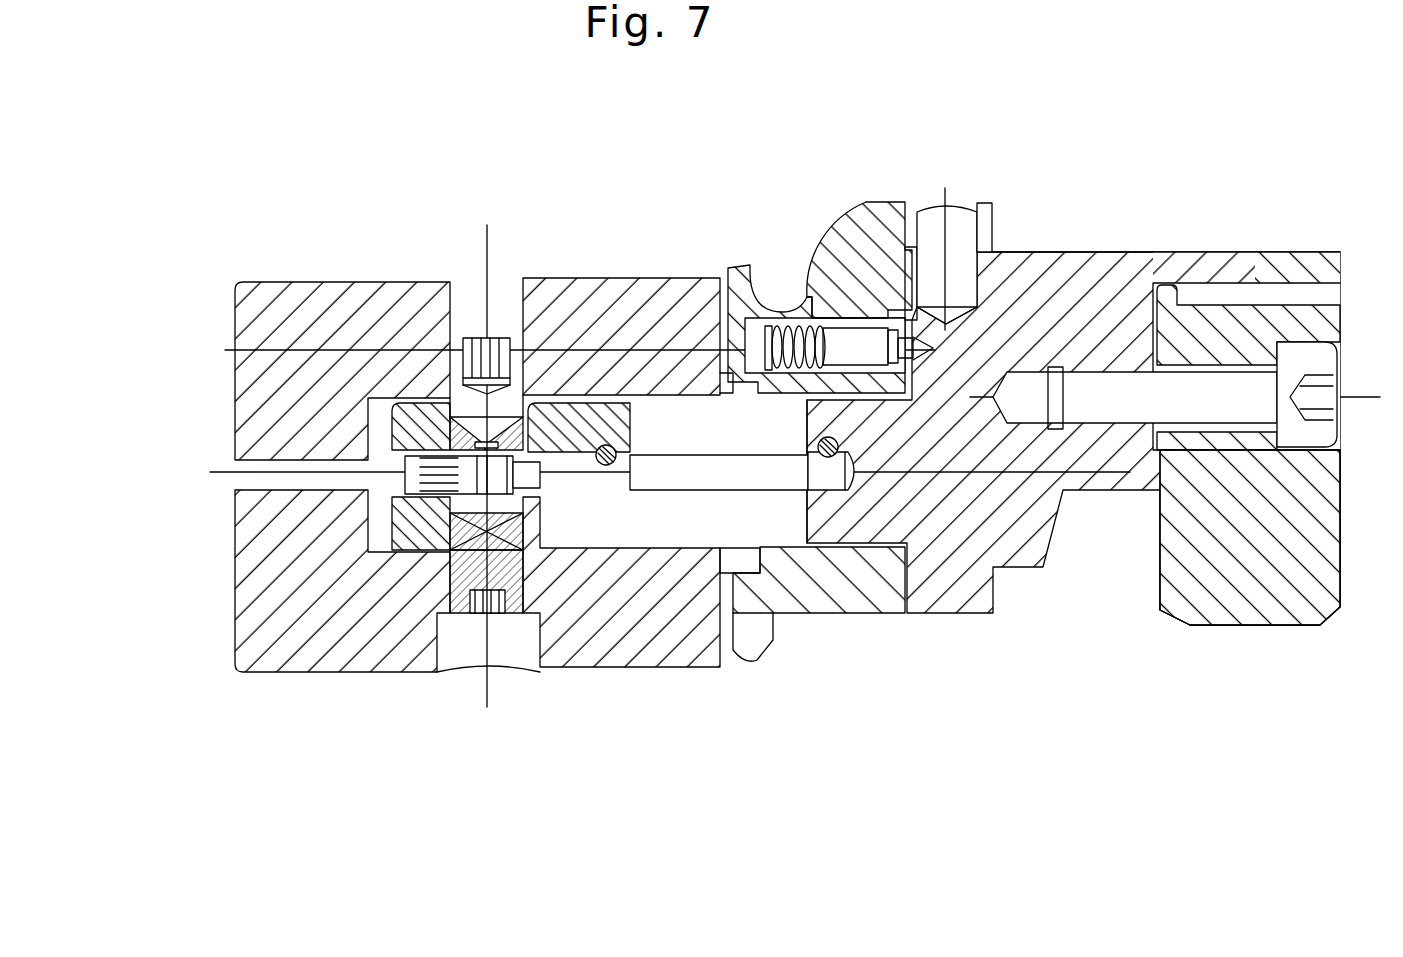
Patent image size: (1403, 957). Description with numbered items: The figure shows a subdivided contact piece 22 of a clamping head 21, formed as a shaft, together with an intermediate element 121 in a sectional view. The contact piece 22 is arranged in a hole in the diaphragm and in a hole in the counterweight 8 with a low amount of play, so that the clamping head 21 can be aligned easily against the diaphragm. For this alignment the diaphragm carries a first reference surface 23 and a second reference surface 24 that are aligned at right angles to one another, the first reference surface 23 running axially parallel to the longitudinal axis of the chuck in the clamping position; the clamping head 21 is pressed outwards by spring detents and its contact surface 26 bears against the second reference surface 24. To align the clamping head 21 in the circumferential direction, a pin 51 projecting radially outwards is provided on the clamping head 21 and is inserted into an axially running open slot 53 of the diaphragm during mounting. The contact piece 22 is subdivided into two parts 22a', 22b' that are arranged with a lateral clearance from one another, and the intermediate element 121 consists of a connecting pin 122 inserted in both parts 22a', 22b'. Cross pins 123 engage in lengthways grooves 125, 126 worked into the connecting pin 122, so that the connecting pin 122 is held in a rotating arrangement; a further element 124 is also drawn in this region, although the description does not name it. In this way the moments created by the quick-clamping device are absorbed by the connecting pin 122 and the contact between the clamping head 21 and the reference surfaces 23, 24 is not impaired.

The counterweight 8 is at (318, 282).
The clamping head 21 is at (1120, 252).
The contact piece 22 is at (385, 510).
The part of the contact piece 22a' is at (782, 329).
The part of the contact piece 22b' is at (579, 284).
The first reference surface 23 is at (1052, 252).
The second reference surface 24 is at (945, 188).
The contact surface 26 is at (855, 580).
The pin 51 is at (905, 245).
The open slot 53 is at (985, 215).
The intermediate element 121 is at (662, 605).
The connecting pin 122 is at (668, 455).
The cross pin 123 is at (729, 266).
The adjusting screw 124 is at (488, 290).
The lengthways groove 125 is at (826, 462).
The lengthways groove 126 is at (607, 470).